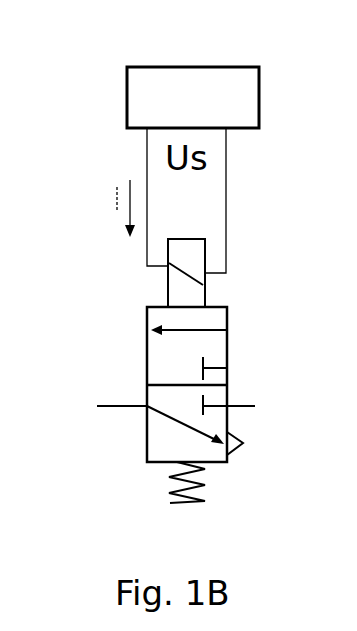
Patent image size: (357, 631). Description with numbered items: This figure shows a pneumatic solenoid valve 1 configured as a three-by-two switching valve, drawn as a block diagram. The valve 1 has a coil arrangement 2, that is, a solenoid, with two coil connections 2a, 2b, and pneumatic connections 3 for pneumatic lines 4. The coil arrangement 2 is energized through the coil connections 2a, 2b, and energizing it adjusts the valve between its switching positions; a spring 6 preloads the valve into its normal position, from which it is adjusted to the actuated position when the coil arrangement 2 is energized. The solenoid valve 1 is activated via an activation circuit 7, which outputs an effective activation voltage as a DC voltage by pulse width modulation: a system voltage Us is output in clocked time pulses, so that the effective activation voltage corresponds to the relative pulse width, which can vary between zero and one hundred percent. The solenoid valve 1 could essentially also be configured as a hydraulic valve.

The activation circuit 7 is at (124, 89).
The coil arrangement 2 is at (205, 288).
The coil connection 2a is at (168, 268).
The coil connection 2b is at (207, 276).
The pneumatic solenoid valve 1 is at (147, 309).
The pneumatic connections 3 is at (147, 406).
The pneumatic lines 4 is at (112, 406).
The spring 6 is at (170, 490).